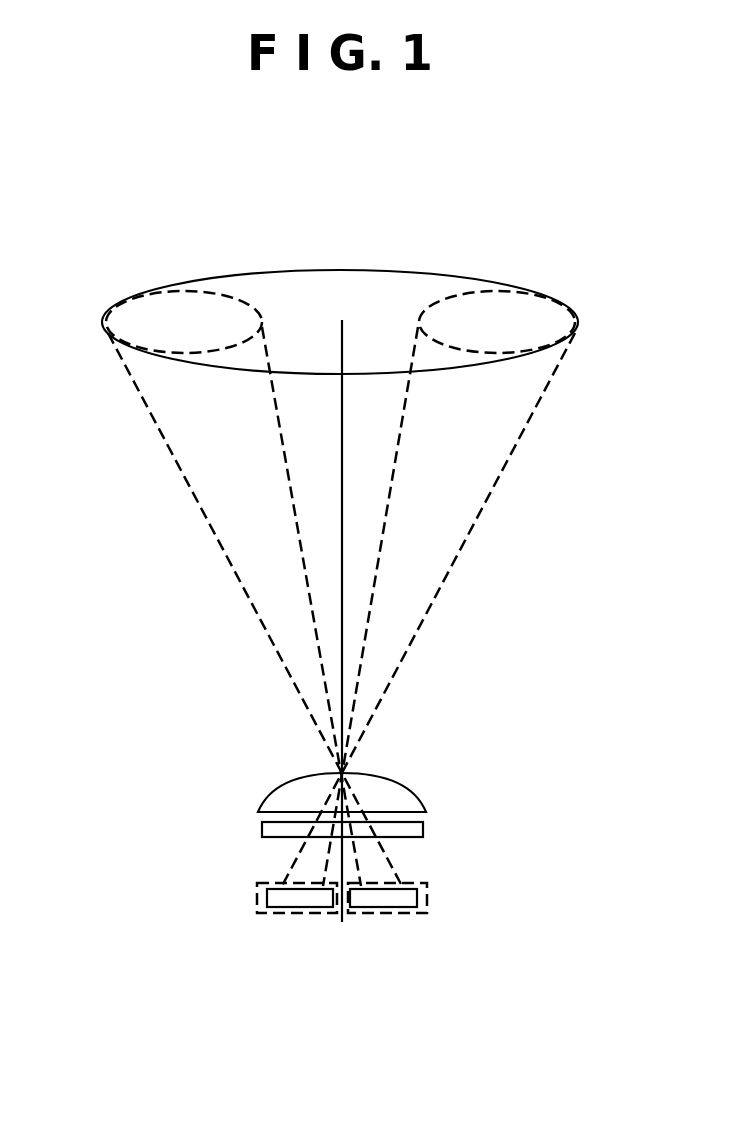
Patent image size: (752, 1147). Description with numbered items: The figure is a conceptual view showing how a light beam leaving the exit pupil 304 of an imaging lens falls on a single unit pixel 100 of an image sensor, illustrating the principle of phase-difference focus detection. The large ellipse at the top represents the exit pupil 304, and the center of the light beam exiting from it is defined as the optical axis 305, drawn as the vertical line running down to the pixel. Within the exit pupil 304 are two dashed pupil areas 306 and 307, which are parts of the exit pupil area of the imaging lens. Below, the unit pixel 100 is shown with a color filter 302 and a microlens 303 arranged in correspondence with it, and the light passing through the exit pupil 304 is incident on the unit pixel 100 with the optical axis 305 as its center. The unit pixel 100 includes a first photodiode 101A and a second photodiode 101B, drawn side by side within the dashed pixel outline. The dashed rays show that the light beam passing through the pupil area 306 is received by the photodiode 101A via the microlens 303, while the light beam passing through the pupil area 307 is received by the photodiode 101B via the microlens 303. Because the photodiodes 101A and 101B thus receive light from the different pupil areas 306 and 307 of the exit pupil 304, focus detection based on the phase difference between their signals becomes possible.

The unit pixel 100 is at (427, 883).
The first photodiode 101A is at (298, 900).
The second photodiode 101B is at (385, 900).
The color filter 302 is at (262, 833).
The microlens 303 is at (260, 807).
The exit pupil 304 is at (237, 273).
The optical axis 305 is at (343, 338).
The pupil area 306 is at (498, 310).
The pupil area 307 is at (173, 320).